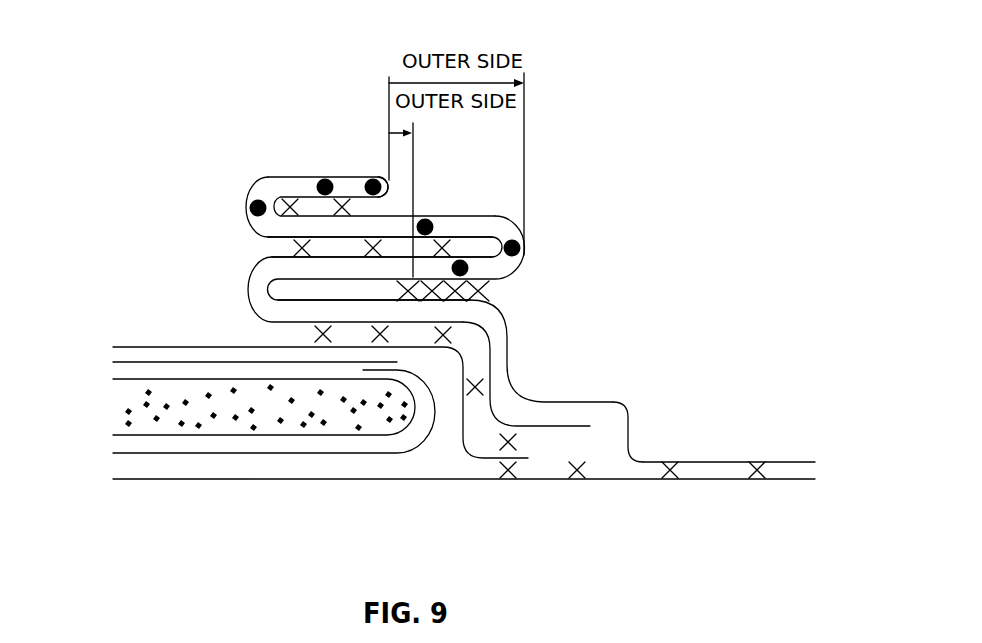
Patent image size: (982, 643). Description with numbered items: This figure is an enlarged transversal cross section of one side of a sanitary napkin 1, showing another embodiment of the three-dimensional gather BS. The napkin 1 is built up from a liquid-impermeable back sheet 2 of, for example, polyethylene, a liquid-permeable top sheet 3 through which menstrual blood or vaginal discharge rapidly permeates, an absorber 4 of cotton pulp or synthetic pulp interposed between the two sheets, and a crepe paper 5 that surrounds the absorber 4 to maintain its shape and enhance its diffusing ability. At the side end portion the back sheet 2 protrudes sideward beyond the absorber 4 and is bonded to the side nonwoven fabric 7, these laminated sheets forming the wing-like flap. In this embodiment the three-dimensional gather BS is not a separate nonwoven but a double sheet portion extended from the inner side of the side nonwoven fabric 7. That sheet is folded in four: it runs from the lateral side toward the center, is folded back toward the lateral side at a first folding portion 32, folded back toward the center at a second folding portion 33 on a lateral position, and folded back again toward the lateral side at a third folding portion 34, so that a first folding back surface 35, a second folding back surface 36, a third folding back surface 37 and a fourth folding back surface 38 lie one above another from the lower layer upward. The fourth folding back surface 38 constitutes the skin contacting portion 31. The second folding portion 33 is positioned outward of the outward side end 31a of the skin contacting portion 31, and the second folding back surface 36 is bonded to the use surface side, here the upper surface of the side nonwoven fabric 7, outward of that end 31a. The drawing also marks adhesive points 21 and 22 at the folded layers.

The sanitary napkin 1 is at (128, 203).
The liquid-impermeable back sheet 2 is at (378, 481).
The liquid-permeable top sheet 3 is at (140, 346).
The absorber 4 is at (150, 425).
The crepe paper 5 is at (247, 362).
The side nonwoven fabric 7 is at (613, 402).
The adhesive 21 is at (460, 261).
The adhesive 22 is at (254, 204).
The skin contacting portion 31 is at (292, 187).
The fourth folding back surface 38 is at (292, 187).
The outward side end 31a is at (390, 188).
The first folding portion 32 is at (250, 292).
The second folding portion 33 is at (526, 248).
The third folding portion 34 is at (249, 208).
The first folding back surface 35 is at (315, 312).
The second folding back surface 36 is at (315, 267).
The third folding back surface 37 is at (313, 225).
The three-dimensional gather BS is at (545, 204).